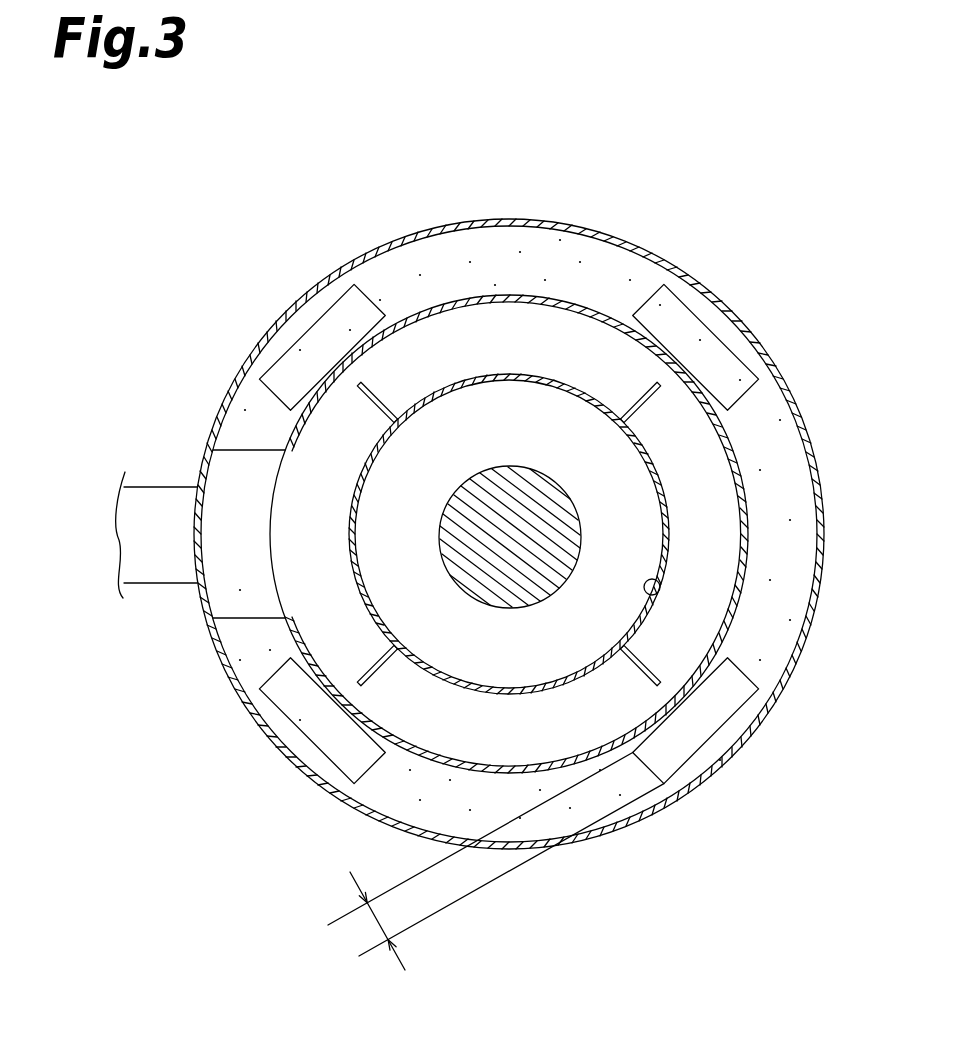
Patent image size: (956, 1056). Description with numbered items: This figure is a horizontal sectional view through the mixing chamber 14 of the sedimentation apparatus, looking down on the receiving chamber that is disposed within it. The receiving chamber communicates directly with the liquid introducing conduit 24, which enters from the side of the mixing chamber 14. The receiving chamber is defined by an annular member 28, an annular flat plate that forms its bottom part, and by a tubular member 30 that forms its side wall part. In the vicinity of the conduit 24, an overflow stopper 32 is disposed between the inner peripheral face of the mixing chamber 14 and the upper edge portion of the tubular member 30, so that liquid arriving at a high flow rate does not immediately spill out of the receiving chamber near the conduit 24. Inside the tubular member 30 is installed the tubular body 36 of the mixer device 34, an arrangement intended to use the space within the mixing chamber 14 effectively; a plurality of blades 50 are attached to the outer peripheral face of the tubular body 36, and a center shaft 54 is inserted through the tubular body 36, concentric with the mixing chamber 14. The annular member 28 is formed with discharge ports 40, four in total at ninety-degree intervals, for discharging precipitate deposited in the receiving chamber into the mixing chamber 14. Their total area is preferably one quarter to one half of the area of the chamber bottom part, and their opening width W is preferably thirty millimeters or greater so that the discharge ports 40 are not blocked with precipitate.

The mixing chamber 14 is at (822, 468).
The liquid introducing conduit 24 is at (163, 568).
The annular member 28 is at (522, 240).
The tubular member 30 is at (508, 297).
The overflow stopper 32 is at (232, 482).
The mixer device 34 is at (690, 545).
The tubular body 36 is at (660, 592).
The discharge ports 40 is at (315, 316).
The blades 50 is at (380, 413).
The center shaft 54 is at (515, 477).
The opening width W is at (496, 880).